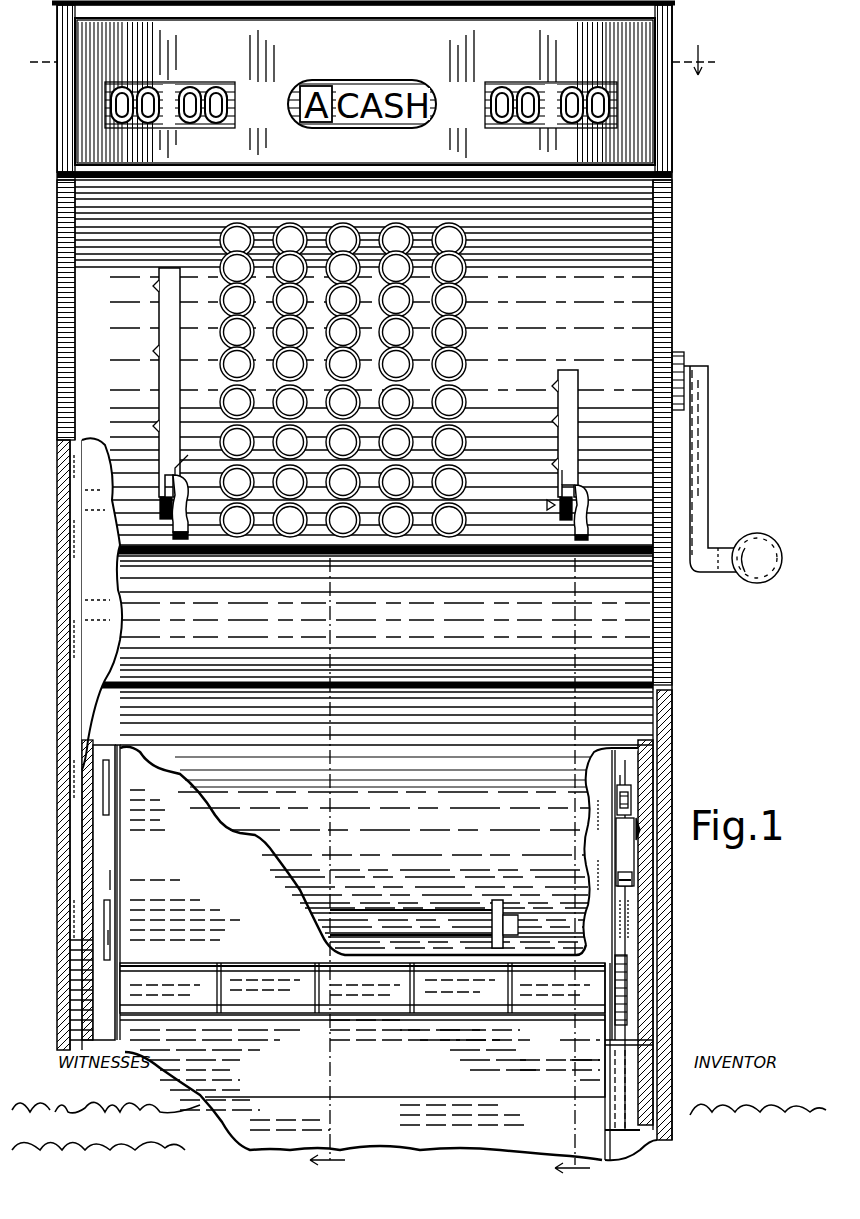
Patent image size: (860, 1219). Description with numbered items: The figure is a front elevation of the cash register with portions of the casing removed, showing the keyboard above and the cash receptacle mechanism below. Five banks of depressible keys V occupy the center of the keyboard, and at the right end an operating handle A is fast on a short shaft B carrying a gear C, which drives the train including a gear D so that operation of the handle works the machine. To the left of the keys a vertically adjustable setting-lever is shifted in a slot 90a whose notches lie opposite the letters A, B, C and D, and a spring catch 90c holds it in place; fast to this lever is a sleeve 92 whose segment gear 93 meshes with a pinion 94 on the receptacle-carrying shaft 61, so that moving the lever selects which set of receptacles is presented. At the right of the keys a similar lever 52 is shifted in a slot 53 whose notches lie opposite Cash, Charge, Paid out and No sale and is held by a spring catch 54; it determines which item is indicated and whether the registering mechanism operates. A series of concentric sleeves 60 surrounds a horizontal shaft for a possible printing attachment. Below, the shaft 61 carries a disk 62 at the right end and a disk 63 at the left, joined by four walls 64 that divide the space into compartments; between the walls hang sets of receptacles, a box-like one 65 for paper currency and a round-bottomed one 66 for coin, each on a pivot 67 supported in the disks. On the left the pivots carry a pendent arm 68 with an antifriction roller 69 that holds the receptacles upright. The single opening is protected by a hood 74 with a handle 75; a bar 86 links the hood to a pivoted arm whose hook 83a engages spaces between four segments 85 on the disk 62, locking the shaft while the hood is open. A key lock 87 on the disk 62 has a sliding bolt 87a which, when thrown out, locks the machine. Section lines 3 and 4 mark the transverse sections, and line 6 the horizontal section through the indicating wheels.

The section line 6— 6 is at (373, 60).
The key V is at (437, 348).
The slot 90a is at (170, 403).
The lever handle 90c is at (178, 457).
The operating handle A is at (150, 505).
The short shaft B is at (129, 425).
The gear C is at (129, 350).
The gear D is at (130, 284).
The slot 53 is at (531, 455).
The vertically adjustable lever 52 is at (569, 453).
The spring catch 54 is at (569, 466).
The sleeve 92 is at (112, 553).
The segment gear 93 is at (75, 632).
The pinion 94 is at (75, 990).
The disk 63 is at (112, 858).
The plates or walls 64 is at (361, 953).
The box-like receptacle 65 is at (362, 1056).
The round-bottom receptacle 66 is at (362, 988).
The pin or pivot 67 is at (104, 870).
The pendent arm 68 is at (98, 784).
The antifriction roller 69 is at (98, 910).
The concentric sleeves 60 is at (98, 916).
The covering or hood 74 is at (384, 870).
The handle 75 is at (424, 924).
The disk 62 is at (610, 954).
The key lock 87 is at (624, 862).
The sliding bolt 87a is at (612, 764).
The hook 83a is at (632, 880).
The bar 86 is at (640, 912).
The segments 85 is at (640, 990).
The rotatable shaft 61 is at (644, 1050).
The section line 3— 3 is at (572, 876).
The section line 4— 4 is at (327, 875).